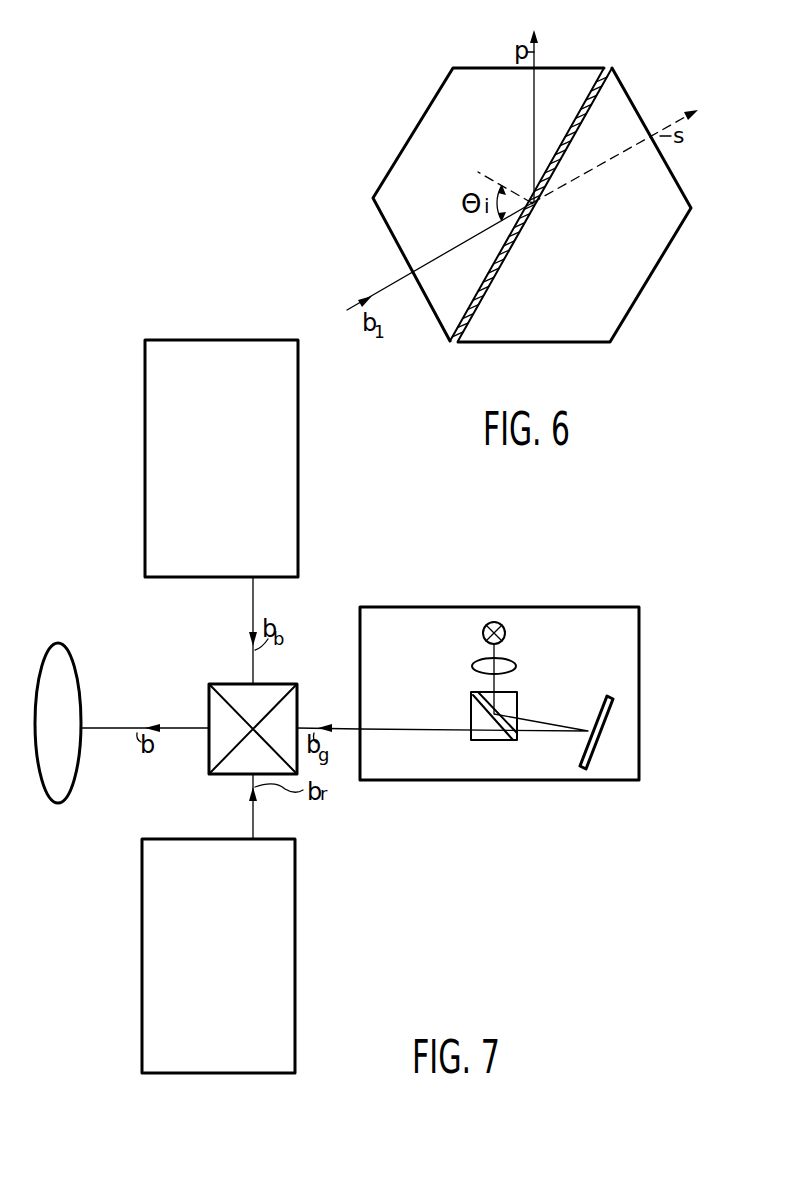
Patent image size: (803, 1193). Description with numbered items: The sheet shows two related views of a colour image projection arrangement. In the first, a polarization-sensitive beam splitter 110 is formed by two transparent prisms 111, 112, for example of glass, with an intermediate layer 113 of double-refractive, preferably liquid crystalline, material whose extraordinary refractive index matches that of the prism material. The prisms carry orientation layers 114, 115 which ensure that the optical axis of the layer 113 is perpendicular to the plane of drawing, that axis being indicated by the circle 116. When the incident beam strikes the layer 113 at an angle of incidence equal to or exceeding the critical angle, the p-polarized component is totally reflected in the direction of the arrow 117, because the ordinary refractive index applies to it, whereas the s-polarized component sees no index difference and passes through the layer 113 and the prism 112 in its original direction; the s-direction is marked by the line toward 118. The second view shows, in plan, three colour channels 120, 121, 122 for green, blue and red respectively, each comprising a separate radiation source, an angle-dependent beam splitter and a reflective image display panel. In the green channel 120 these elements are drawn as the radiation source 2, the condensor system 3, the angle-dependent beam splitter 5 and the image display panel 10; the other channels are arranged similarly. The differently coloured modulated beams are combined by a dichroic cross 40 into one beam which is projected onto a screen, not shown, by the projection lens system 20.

In FIG. 6, the beam splitter 110 is at (403, 62).
In FIG. 6, the transparent prism 111 is at (417, 153).
In FIG. 6, the transparent prism 112 is at (623, 311).
In FIG. 6, the intermediate layer 113 is at (454, 341).
In FIG. 6, the orientation layer 114 is at (597, 84).
In FIG. 6, the orientation layer 115 is at (472, 314).
In FIG. 6, the circle indicating optical axis 116 is at (538, 214).
In FIG. 6, the arrow 117 is at (533, 102).
In FIG. 6, the s-polarization axis 118 is at (629, 148).
In FIG. 7, the colour channel 121 is at (298, 470).
In FIG. 7, the colour channel 122 is at (296, 955).
In FIG. 7, the colour channel 120 is at (580, 606).
In FIG. 7, the dichroic cross 40 is at (265, 683).
In FIG. 7, the projection lens system 20 is at (58, 804).
In FIG. 7, the radiation source 2 is at (506, 633).
In FIG. 7, the condensor system 3 is at (516, 672).
In FIG. 7, the angle-dependent beam splitter 5 is at (490, 742).
In FIG. 7, the image display panel 10 is at (595, 757).